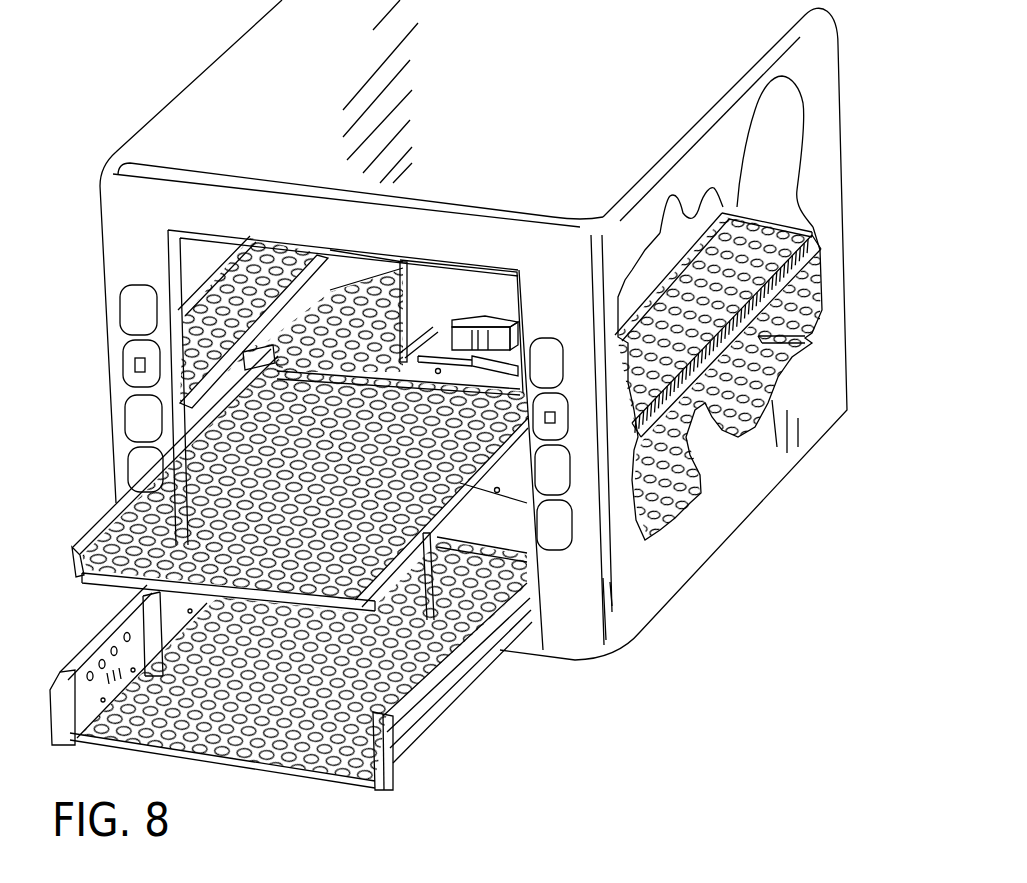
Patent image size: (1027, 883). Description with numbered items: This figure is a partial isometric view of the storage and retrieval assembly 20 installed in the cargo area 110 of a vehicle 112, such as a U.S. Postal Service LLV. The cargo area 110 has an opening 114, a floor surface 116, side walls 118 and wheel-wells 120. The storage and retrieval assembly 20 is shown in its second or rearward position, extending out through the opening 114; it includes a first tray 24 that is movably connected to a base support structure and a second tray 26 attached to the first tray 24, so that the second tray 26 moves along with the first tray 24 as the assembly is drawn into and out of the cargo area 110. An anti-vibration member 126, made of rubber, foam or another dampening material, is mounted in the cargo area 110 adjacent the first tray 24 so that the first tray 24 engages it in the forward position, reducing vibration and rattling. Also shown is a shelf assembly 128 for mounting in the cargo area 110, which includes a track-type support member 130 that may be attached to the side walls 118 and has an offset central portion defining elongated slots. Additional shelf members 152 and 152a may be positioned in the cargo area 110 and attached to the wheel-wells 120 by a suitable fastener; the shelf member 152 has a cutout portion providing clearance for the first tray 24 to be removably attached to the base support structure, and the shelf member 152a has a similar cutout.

The storage and retrieval assembly 20 is at (500, 725).
The first tray 24 is at (258, 776).
The second tray 26 is at (85, 592).
The cargo area 110 is at (773, 150).
The vehicle 112 is at (180, 78).
The opening 114 is at (481, 292).
The floor surface 116 is at (520, 535).
The side walls 118 is at (222, 266).
The wheel-wells 120 is at (415, 327).
The anti-vibration member 126 is at (507, 337).
The shelf assembly 128 is at (277, 273).
The support member 130 is at (790, 314).
The shelf member 152 is at (690, 500).
The shelf member 152a is at (365, 282).